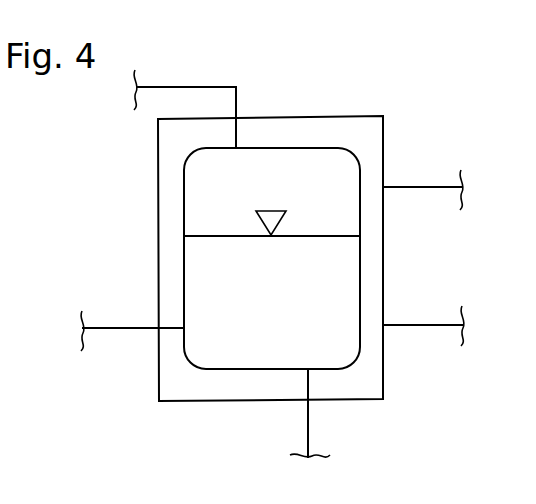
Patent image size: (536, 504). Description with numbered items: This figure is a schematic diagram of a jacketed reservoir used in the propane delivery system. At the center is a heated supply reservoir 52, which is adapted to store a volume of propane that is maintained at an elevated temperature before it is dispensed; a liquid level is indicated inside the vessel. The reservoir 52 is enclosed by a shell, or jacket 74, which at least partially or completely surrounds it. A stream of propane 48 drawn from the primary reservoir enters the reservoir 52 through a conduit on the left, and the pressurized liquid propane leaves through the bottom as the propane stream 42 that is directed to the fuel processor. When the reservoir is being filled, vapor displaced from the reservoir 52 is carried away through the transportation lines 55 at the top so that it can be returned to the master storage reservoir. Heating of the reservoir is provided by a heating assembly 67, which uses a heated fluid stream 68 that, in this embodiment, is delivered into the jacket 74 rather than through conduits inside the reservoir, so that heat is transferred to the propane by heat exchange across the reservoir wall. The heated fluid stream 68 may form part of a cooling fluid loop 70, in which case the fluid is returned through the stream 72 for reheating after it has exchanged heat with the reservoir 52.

The propane stream 42 is at (310, 418).
The stream of propane 48 is at (125, 330).
The supply reservoir 52 is at (293, 148).
The transportation lines 55 is at (196, 86).
The heating assembly 67 is at (425, 305).
The heated fluid stream 68 is at (436, 186).
The cooling fluid loop 70 is at (428, 327).
The return stream 72 is at (403, 327).
The jacket 74 is at (383, 116).